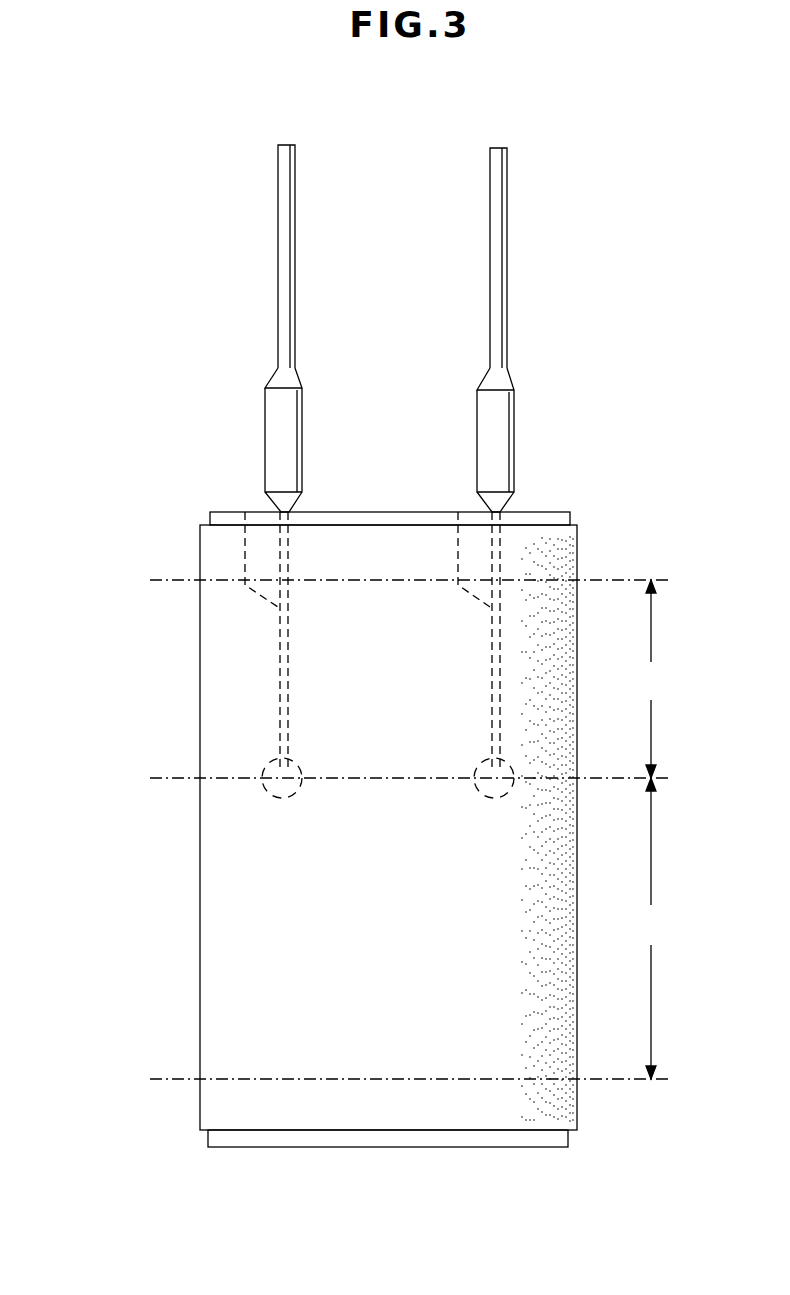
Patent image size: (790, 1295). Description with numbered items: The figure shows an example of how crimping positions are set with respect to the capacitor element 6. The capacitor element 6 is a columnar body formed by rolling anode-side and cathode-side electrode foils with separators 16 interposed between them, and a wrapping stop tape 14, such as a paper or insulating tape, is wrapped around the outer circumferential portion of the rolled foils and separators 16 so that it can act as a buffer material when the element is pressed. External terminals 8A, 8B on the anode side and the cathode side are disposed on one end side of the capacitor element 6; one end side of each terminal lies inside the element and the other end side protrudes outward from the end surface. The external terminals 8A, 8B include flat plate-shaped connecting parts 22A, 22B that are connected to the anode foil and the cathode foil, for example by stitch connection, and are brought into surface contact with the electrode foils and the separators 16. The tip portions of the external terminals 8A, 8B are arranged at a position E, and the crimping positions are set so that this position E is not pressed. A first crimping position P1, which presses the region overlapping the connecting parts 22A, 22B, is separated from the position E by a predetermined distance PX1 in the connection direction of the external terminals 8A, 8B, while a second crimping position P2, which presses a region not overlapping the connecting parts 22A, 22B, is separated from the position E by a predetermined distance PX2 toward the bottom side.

The capacitor element 6 is at (62, 500).
The external terminal 8A is at (507, 215).
The external terminal 8B is at (295, 212).
The wrapping stop tape 14 is at (200, 918).
The separator 16 is at (210, 517).
The connecting part 22A is at (458, 510).
The connecting part 22B is at (246, 510).
The position P1 is at (432, 582).
The position P2 is at (432, 1081).
The position E is at (423, 780).
The predetermined distance PX1 is at (655, 679).
The predetermined distance PX2 is at (655, 928).